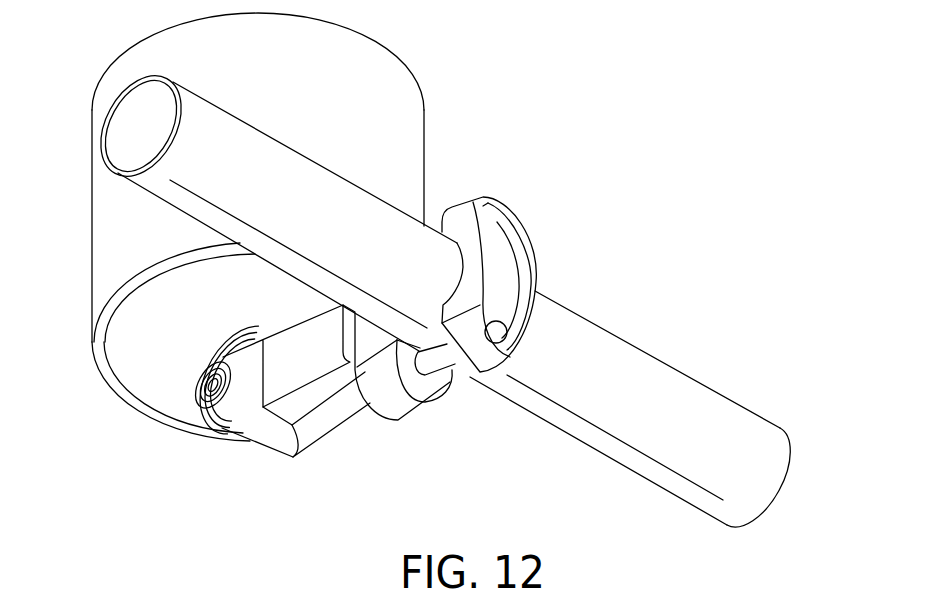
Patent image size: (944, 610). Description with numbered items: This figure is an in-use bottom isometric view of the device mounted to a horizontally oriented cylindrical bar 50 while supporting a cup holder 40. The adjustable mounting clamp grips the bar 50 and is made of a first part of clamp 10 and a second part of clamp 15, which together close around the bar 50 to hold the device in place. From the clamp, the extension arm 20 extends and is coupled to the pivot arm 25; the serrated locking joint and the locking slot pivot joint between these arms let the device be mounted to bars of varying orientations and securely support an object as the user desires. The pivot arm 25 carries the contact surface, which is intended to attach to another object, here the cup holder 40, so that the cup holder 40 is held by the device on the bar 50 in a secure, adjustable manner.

The first part of clamp 10 is at (463, 205).
The second part of clamp 15 is at (413, 418).
The extension arm 20 is at (323, 426).
The pivot arm 25 is at (255, 448).
The cup holder 40 is at (93, 230).
The bar 50 is at (643, 362).